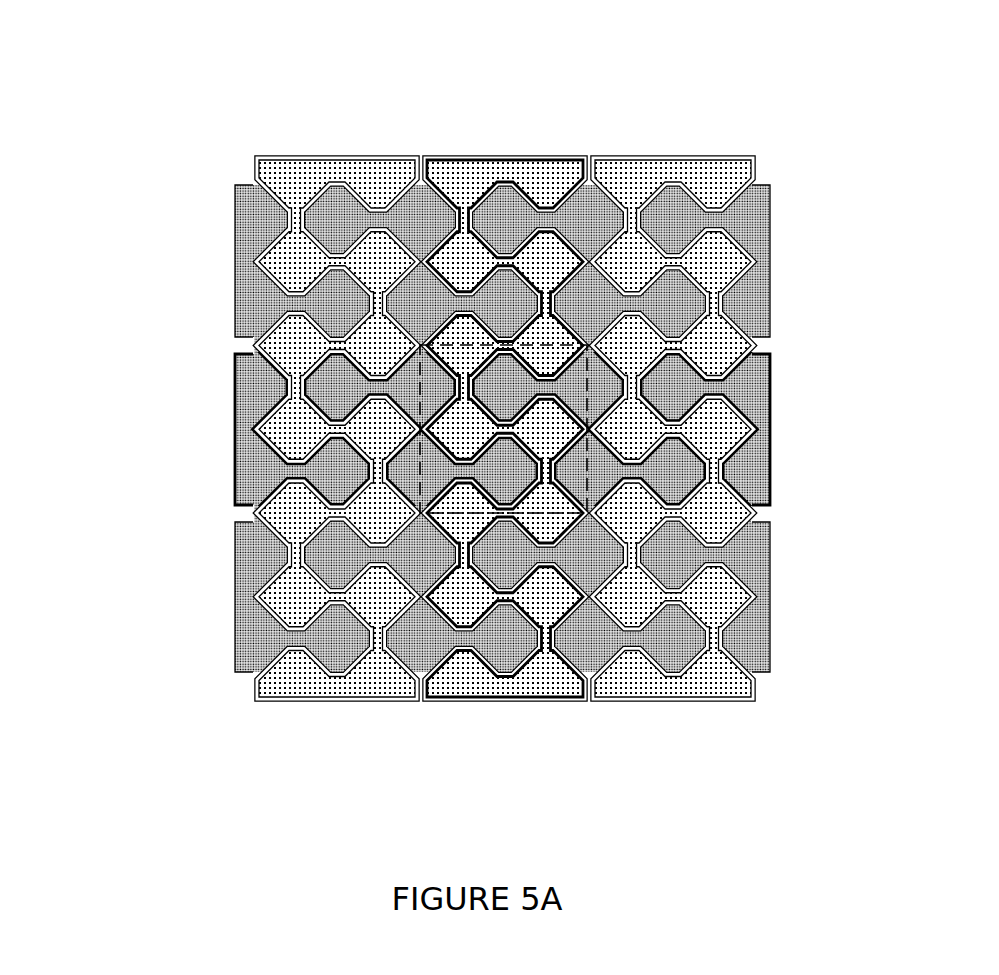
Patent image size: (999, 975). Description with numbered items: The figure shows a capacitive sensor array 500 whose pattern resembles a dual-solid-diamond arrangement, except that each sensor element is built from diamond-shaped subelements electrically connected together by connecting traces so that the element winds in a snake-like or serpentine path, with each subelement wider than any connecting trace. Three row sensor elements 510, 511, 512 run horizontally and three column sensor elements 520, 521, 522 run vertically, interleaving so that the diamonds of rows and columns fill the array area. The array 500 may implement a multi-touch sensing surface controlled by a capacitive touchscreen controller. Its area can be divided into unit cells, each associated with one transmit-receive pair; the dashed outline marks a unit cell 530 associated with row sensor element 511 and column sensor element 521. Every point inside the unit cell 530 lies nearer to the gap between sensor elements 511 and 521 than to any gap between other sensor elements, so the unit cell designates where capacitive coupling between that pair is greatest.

The capacitive sensor array 500 is at (777, 66).
The row sensor element 510 is at (445, 261).
The row sensor element 511 is at (445, 428).
The row sensor element 512 is at (445, 597).
The column sensor element 520 is at (337, 445).
The column sensor element 521 is at (505, 445).
The column sensor element 522 is at (673, 445).
The unit cell 530 is at (590, 430).